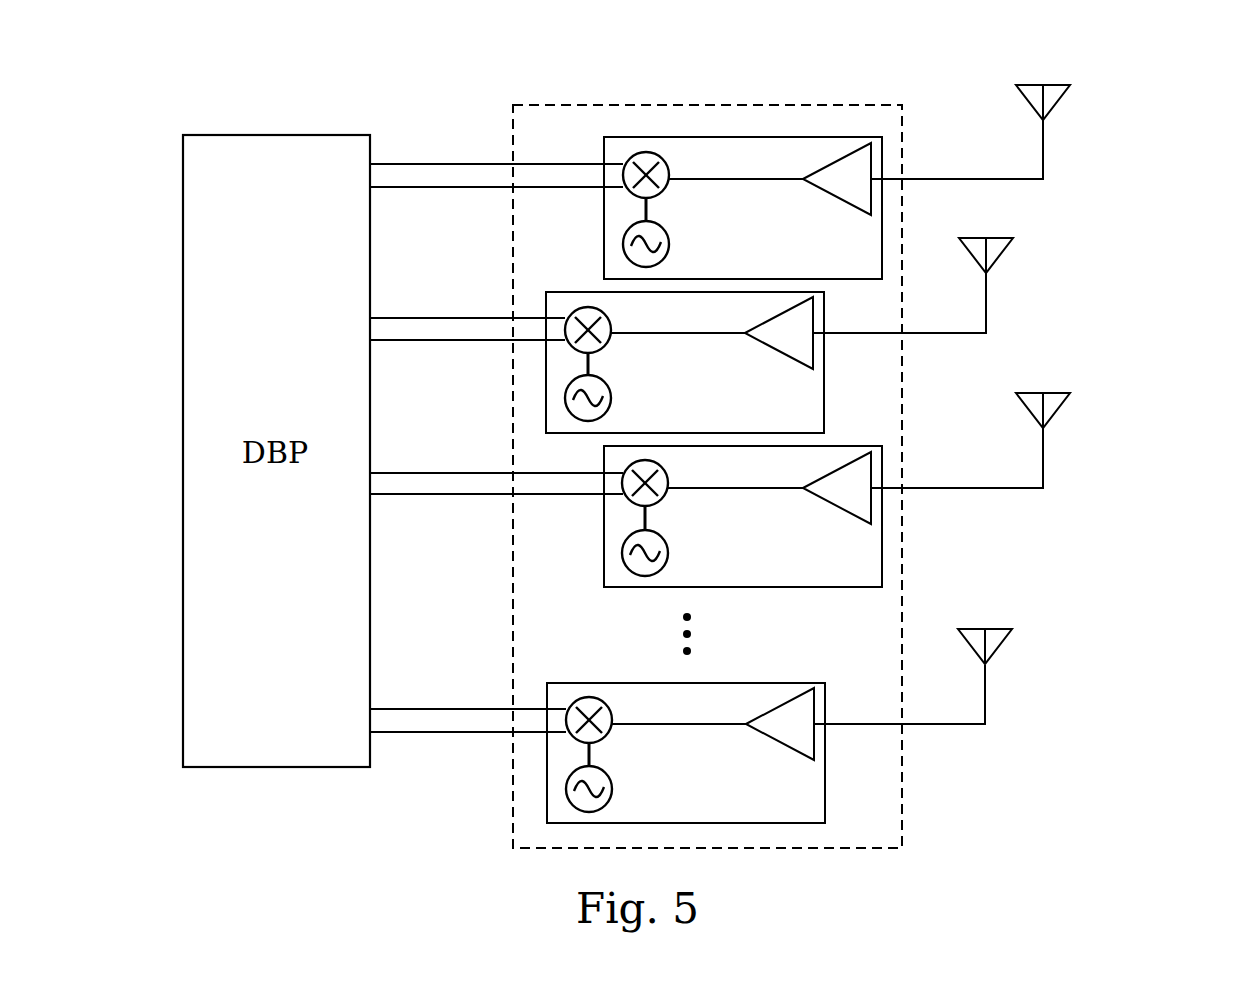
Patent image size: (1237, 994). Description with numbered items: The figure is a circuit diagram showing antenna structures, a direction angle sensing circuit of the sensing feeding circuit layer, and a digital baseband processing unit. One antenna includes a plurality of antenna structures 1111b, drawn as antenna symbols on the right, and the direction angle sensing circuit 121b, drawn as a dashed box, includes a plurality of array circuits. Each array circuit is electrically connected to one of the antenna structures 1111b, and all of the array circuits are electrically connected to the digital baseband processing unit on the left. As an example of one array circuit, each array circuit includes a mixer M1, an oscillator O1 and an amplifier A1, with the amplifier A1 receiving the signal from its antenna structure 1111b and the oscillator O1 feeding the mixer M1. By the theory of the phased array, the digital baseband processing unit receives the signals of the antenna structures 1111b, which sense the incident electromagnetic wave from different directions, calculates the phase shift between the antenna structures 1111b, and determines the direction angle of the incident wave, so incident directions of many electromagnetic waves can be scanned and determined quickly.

The direction angle sensing circuit 121b is at (538, 104).
The mixer M1 is at (624, 164).
The oscillator O1 is at (623, 242).
The amplifier A1 is at (880, 160).
The antenna structure 1111b is at (1062, 100).